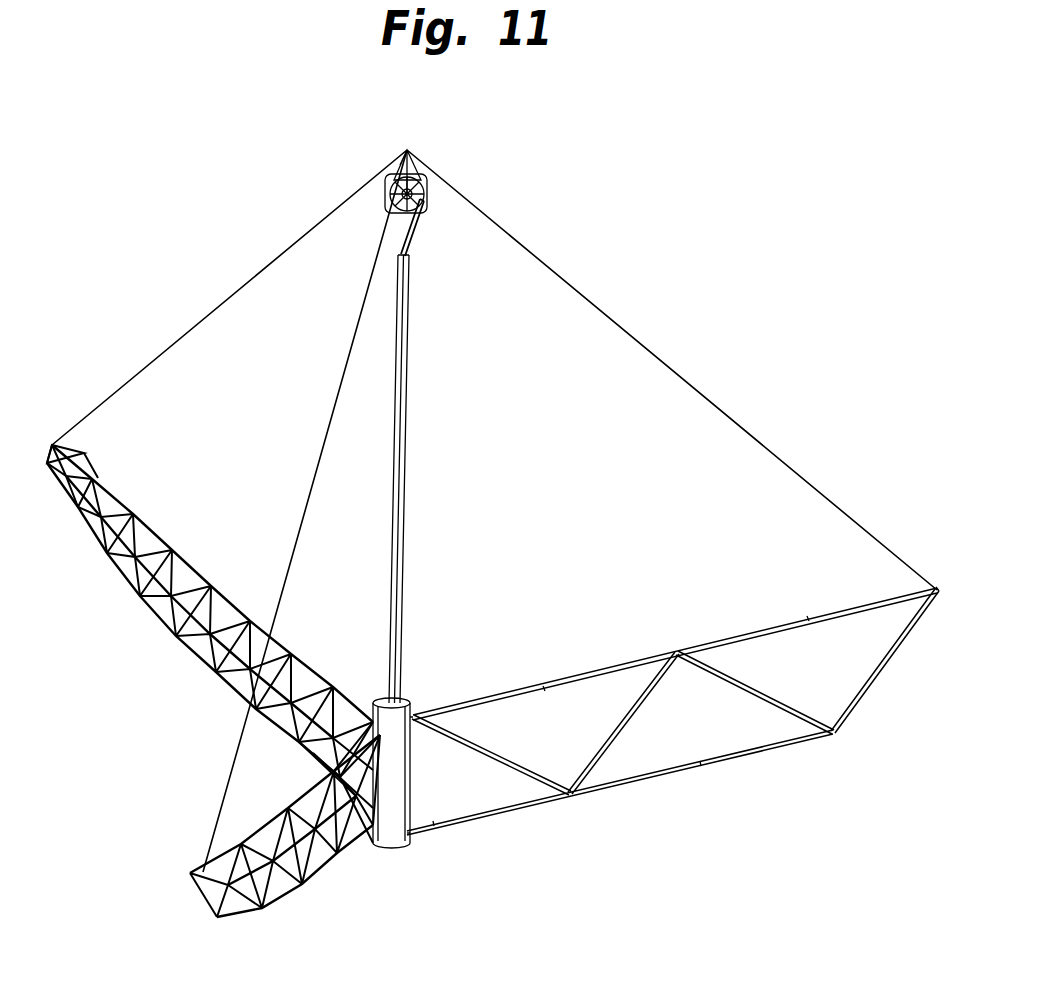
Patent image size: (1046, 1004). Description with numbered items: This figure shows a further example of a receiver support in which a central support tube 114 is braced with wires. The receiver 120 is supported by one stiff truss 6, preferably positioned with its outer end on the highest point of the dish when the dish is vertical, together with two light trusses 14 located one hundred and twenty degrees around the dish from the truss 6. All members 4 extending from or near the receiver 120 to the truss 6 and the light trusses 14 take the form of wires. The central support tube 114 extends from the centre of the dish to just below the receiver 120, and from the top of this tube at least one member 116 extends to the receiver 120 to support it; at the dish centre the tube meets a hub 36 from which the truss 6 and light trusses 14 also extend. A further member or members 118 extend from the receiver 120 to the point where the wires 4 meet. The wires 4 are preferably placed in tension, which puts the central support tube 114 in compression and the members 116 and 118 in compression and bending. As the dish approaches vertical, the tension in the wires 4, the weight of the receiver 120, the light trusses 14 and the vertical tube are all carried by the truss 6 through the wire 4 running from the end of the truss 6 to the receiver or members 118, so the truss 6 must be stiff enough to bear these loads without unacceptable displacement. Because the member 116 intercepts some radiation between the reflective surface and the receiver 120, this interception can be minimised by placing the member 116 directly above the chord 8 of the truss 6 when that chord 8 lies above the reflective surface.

The wires 4 is at (143, 367).
The truss 6 is at (673, 726).
The chord 8 is at (750, 638).
The light trusses 14 is at (283, 811).
The hub 36 is at (400, 845).
The central support tube 114 is at (402, 468).
The member 116 is at (417, 228).
The member 118 is at (400, 172).
The receiver 120 is at (387, 197).